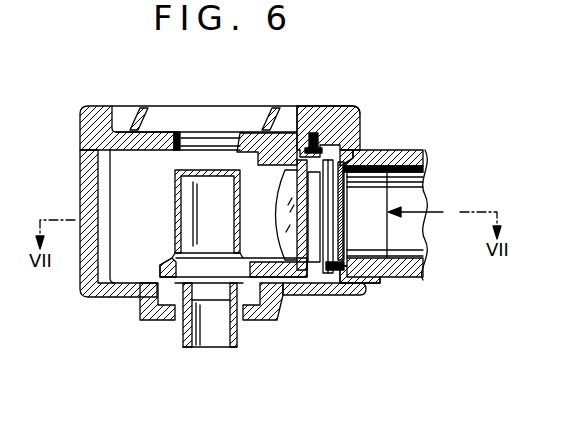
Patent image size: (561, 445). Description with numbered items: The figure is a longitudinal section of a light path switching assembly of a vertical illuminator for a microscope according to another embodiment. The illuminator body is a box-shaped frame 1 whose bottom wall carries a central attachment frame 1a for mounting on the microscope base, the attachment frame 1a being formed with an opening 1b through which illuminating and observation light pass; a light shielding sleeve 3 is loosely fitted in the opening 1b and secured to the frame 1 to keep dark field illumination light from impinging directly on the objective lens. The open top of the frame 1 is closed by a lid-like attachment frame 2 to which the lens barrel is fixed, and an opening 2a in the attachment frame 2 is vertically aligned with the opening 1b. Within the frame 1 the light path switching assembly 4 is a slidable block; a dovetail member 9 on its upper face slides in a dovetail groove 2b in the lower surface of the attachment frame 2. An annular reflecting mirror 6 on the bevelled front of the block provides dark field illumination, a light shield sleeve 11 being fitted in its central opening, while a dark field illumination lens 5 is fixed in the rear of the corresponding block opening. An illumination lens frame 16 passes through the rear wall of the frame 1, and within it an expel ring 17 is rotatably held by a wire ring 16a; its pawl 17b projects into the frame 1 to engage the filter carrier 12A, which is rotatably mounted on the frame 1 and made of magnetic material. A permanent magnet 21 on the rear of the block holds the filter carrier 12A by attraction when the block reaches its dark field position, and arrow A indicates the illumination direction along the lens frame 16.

The box-shaped frame 1 is at (80, 180).
The attachment frame 1a is at (142, 306).
The opening 1b is at (248, 316).
The attachment frame 2 is at (85, 128).
The opening 2a is at (195, 135).
The dovetail groove 2b is at (255, 145).
The light shielding sleeve 3 is at (183, 340).
The light path switching assembly 4 is at (261, 171).
The dark field illumination lens 5 is at (282, 228).
The annular reflecting mirror 6 is at (171, 259).
The dovetail member 9 is at (278, 152).
The light shield sleeve 11 is at (175, 201).
The filter carrier 12A is at (360, 155).
The illumination lens frame 16 is at (410, 152).
The wire ring 16a is at (343, 223).
The expel ring 17 is at (368, 272).
The pawl 17b is at (331, 266).
The permanent magnet 21 is at (310, 202).
The optical axis direction A is at (428, 210).